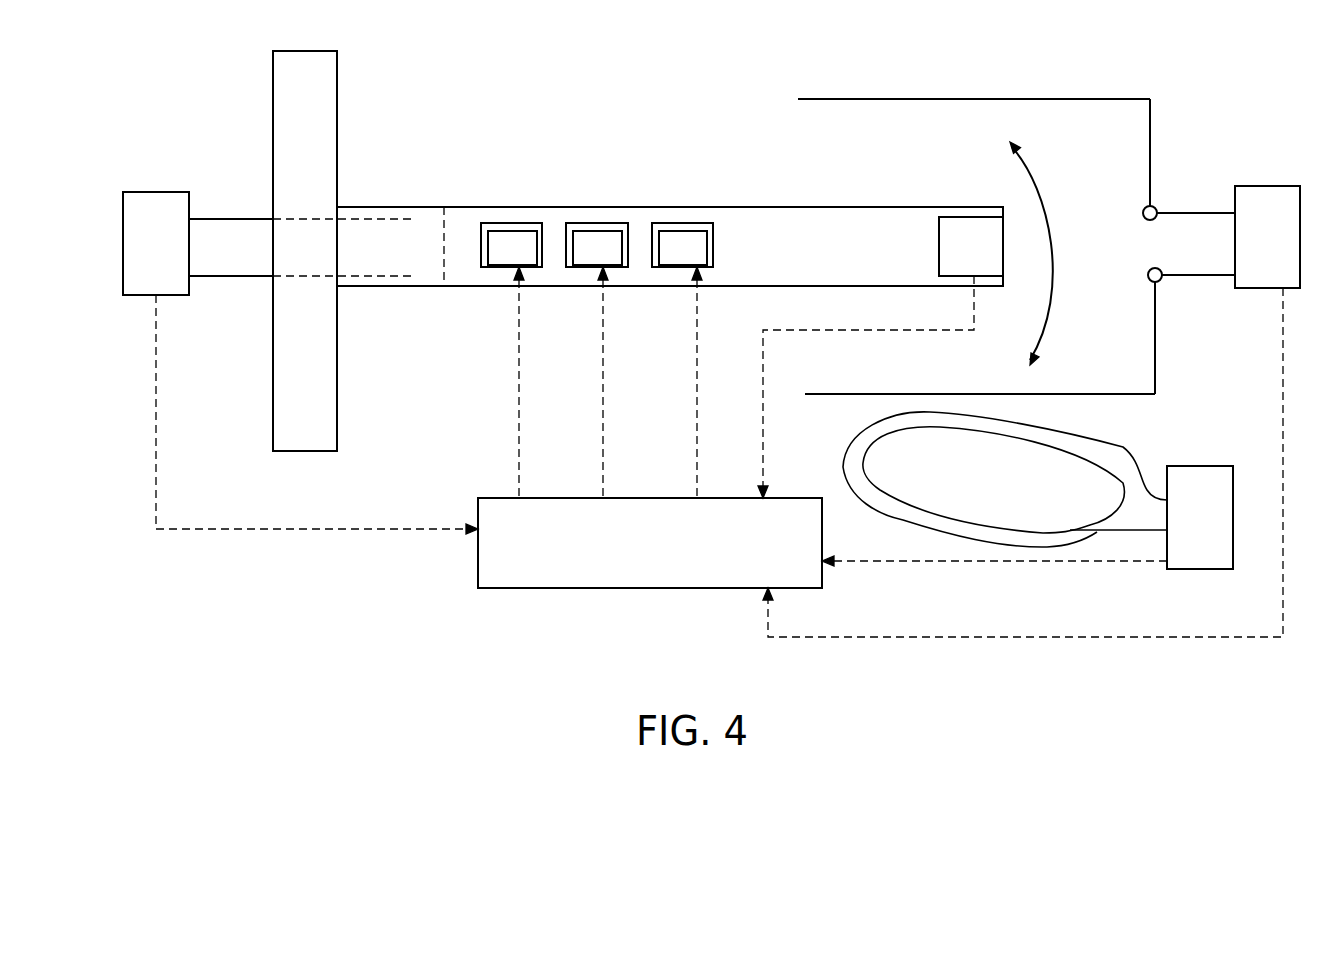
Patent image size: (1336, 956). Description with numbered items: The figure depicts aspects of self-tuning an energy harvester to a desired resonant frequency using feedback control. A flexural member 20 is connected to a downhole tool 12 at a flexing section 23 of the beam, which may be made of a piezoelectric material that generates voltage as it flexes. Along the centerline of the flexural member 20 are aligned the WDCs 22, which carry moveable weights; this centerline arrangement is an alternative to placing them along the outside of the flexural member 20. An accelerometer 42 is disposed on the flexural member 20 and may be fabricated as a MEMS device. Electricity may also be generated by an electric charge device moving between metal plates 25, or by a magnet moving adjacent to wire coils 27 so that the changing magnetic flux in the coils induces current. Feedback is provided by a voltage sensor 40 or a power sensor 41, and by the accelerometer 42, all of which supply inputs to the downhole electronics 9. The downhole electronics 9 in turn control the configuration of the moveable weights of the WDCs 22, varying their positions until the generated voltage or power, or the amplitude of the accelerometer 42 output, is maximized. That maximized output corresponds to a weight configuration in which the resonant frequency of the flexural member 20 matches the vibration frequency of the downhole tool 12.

The downhole electronics 9 is at (804, 554).
The downhole tool 12 is at (295, 134).
The flexural member 20 is at (807, 262).
The WDCs 22 is at (500, 259).
The section of the beam 23 is at (381, 262).
The metal plates 25 is at (917, 99).
The wire coils 27 is at (907, 430).
The voltage sensor 40 is at (142, 237).
The power sensor 41 is at (144, 287).
The accelerometer 42 is at (957, 262).